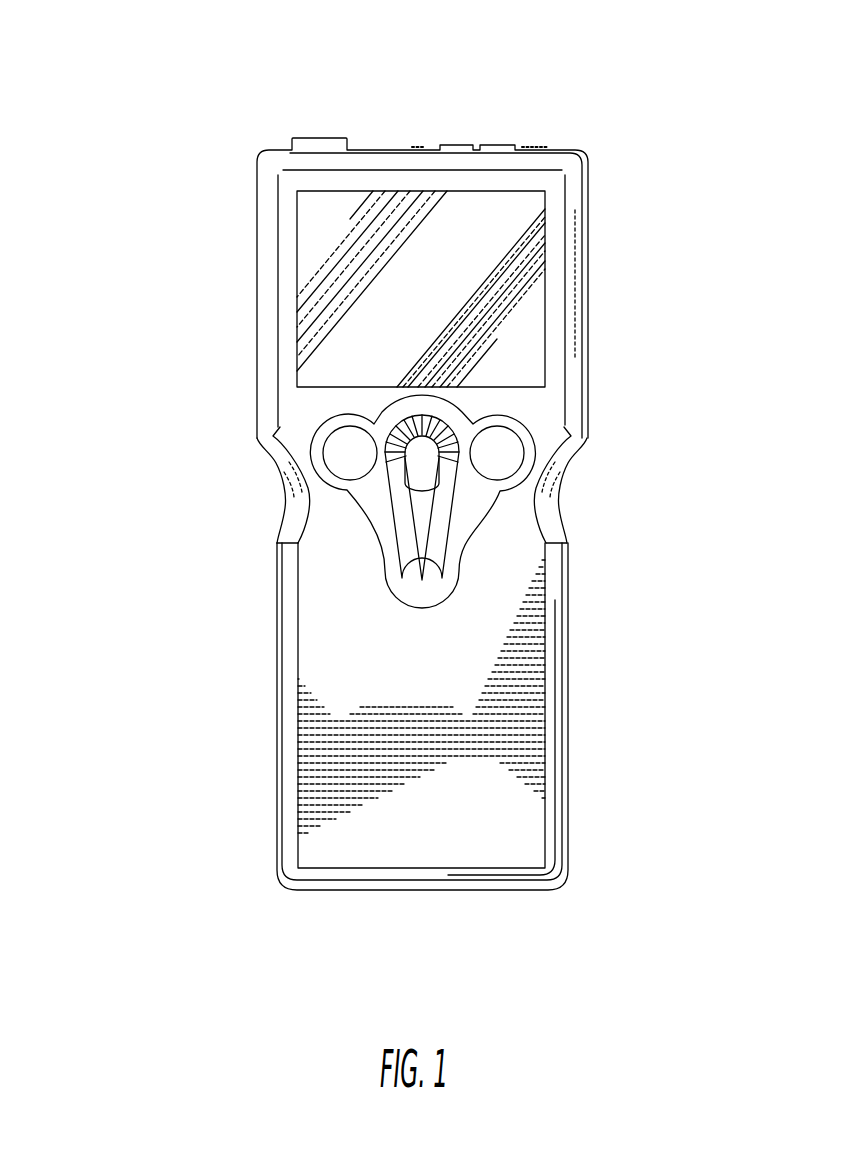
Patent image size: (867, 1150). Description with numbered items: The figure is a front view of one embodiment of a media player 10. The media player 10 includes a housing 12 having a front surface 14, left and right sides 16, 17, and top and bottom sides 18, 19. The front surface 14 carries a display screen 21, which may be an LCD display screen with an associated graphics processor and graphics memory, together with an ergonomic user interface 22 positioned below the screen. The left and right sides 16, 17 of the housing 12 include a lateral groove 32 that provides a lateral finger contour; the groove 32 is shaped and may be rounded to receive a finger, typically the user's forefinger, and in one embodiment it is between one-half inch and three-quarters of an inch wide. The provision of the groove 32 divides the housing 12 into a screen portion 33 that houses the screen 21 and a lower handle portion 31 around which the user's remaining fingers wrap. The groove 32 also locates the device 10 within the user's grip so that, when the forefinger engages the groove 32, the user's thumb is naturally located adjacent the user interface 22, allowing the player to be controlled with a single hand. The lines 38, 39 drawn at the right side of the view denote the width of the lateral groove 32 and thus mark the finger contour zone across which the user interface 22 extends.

The media player 10 is at (183, 90).
The housing 12 is at (553, 812).
The front surface 14 is at (317, 767).
The left side 16 is at (275, 603).
The right side 17 is at (565, 630).
The top side 18 is at (512, 148).
The bottom side 19 is at (413, 887).
The display screen 21 is at (367, 279).
The ergonomic user interface 22 is at (368, 415).
The handle portion 31 is at (343, 648).
The lateral groove 32 is at (278, 490).
The screen portion 33 is at (262, 308).
The line denoting width of lateral groove 38 is at (657, 436).
The line denoting width of lateral groove 39 is at (670, 537).